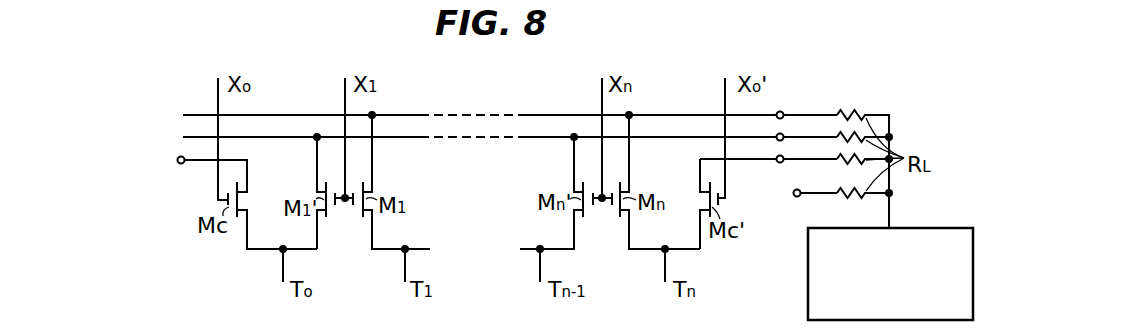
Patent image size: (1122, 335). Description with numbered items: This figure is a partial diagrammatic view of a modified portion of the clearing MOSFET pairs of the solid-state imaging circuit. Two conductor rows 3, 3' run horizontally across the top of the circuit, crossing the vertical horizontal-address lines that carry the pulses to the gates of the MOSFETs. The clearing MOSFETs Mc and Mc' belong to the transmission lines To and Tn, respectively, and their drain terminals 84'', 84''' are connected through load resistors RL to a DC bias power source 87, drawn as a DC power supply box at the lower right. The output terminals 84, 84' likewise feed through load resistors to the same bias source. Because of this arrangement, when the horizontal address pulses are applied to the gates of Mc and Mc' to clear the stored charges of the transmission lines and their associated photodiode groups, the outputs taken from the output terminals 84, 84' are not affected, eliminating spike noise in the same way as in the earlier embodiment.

The first row conductor line 3 is at (479, 95).
The second row conductor line 3' is at (479, 107).
The output terminal 84 is at (799, 100).
The output terminal 84' is at (761, 162).
The drain terminal 84'' is at (474, 200).
The drain terminal 84''' is at (771, 187).
The DC bias power source 87 is at (808, 266).